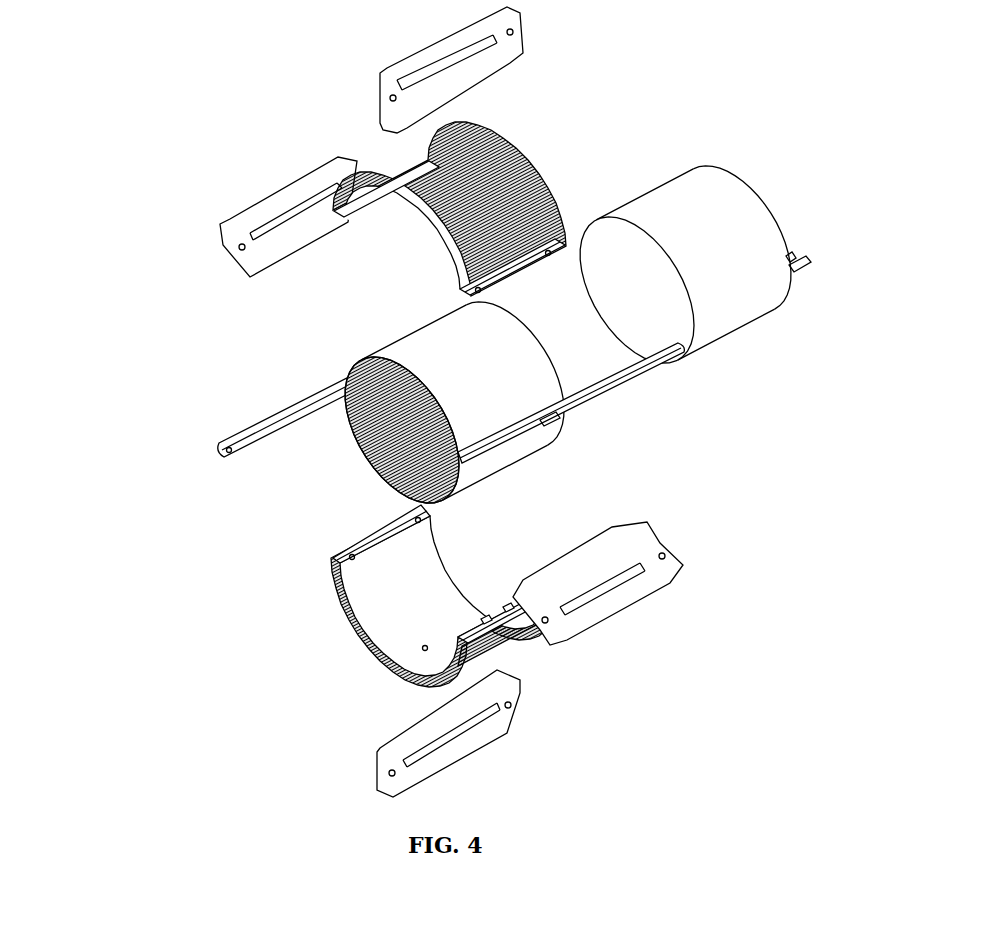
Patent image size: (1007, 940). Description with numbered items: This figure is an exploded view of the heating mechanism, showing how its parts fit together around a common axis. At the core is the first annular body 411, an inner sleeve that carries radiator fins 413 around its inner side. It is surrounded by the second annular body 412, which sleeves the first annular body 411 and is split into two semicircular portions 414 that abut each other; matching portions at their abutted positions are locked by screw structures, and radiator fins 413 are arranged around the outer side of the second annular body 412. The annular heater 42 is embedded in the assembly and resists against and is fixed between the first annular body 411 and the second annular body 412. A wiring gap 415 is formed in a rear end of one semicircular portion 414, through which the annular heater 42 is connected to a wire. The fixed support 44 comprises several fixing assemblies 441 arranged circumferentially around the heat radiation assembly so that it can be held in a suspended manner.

The annular heater 42 is at (735, 277).
The fixed support 44 is at (190, 42).
The fixing assembly 441 is at (407, 100).
The second annular body 412 is at (107, 432).
The first annular body 411 is at (487, 377).
The radiator fins 413 is at (498, 209).
The semicircular portion 414 is at (365, 204).
The wiring gap 415 is at (520, 620).